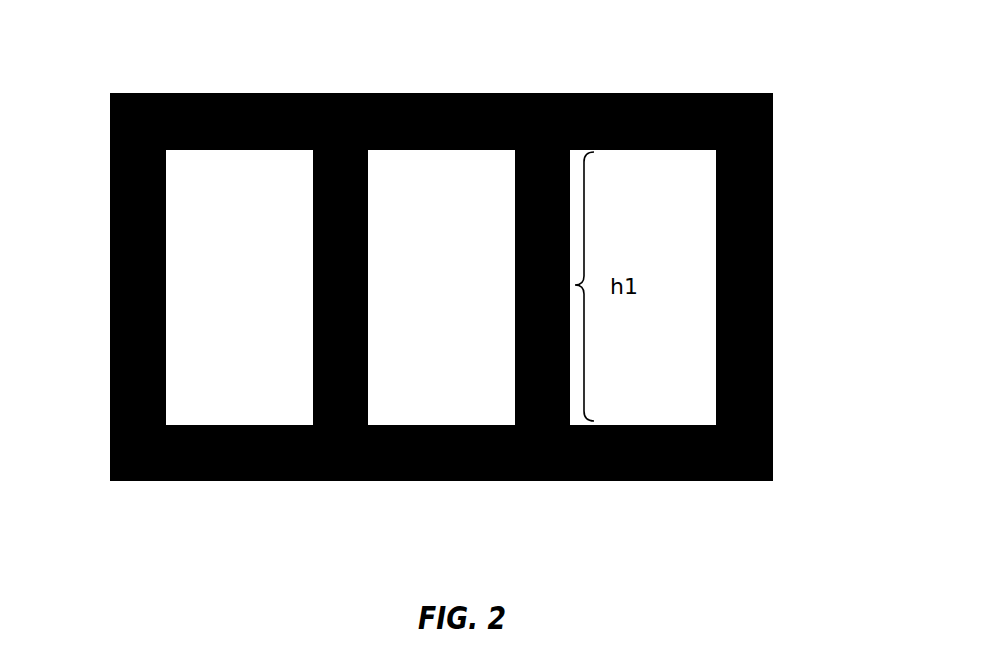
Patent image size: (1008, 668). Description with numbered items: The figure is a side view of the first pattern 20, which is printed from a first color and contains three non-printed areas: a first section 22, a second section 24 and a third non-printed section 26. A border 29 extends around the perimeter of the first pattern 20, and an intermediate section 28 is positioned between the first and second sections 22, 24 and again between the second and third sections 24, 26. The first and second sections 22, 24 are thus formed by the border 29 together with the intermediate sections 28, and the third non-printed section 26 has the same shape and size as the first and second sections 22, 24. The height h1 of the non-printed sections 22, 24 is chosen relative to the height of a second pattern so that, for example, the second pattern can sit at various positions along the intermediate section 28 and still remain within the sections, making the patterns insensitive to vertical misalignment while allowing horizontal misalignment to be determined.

The first pattern 20 is at (820, 142).
The first section 22 is at (213, 170).
The second section 24 is at (452, 165).
The third non-printed section 26 is at (653, 173).
The intermediate section 28 is at (335, 168).
The border 29 is at (122, 380).